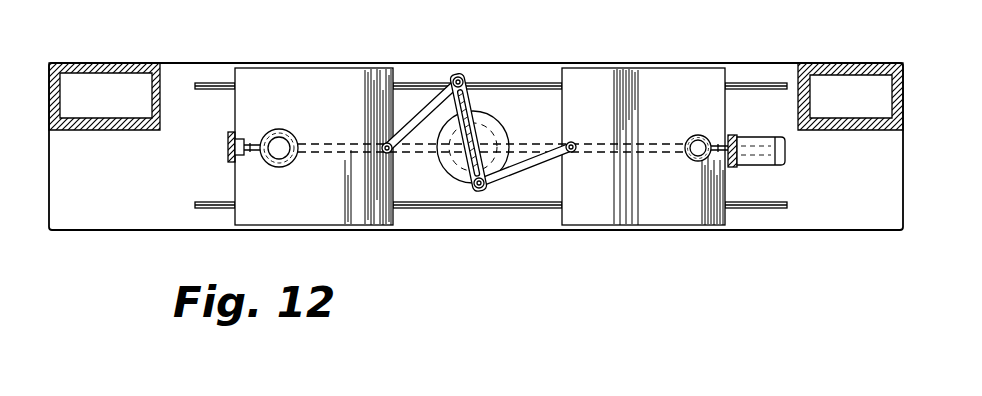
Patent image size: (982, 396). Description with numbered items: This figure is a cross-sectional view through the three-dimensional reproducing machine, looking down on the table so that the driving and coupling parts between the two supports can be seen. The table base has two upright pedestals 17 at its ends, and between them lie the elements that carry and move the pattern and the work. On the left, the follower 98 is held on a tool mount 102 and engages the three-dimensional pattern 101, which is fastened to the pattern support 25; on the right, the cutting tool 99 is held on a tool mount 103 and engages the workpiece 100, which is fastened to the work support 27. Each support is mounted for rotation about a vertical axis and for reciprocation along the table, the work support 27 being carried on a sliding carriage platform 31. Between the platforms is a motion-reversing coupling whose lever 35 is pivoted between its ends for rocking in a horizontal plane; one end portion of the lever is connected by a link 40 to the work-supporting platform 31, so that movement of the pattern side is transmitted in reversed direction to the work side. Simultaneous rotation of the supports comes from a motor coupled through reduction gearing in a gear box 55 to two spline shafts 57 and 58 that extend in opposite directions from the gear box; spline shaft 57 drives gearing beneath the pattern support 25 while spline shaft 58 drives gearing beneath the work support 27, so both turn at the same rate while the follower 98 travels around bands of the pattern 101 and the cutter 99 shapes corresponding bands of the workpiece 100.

The upright pedestal 17 is at (110, 232).
The carriage platform 31 is at (363, 72).
The pattern support 25 is at (300, 130).
The spline shaft 57 is at (411, 155).
The spline shaft 58 is at (635, 157).
The tool mount 102 is at (228, 140).
The follower 98 is at (252, 144).
The three-dimensional pattern 101 is at (284, 167).
The gear box 55 is at (499, 120).
The link 40 is at (424, 102).
The lever 35 is at (470, 100).
The workpiece 100 is at (705, 135).
The work support 27 is at (689, 137).
The cutting tool 99 is at (695, 161).
The tool mount 103 is at (735, 133).